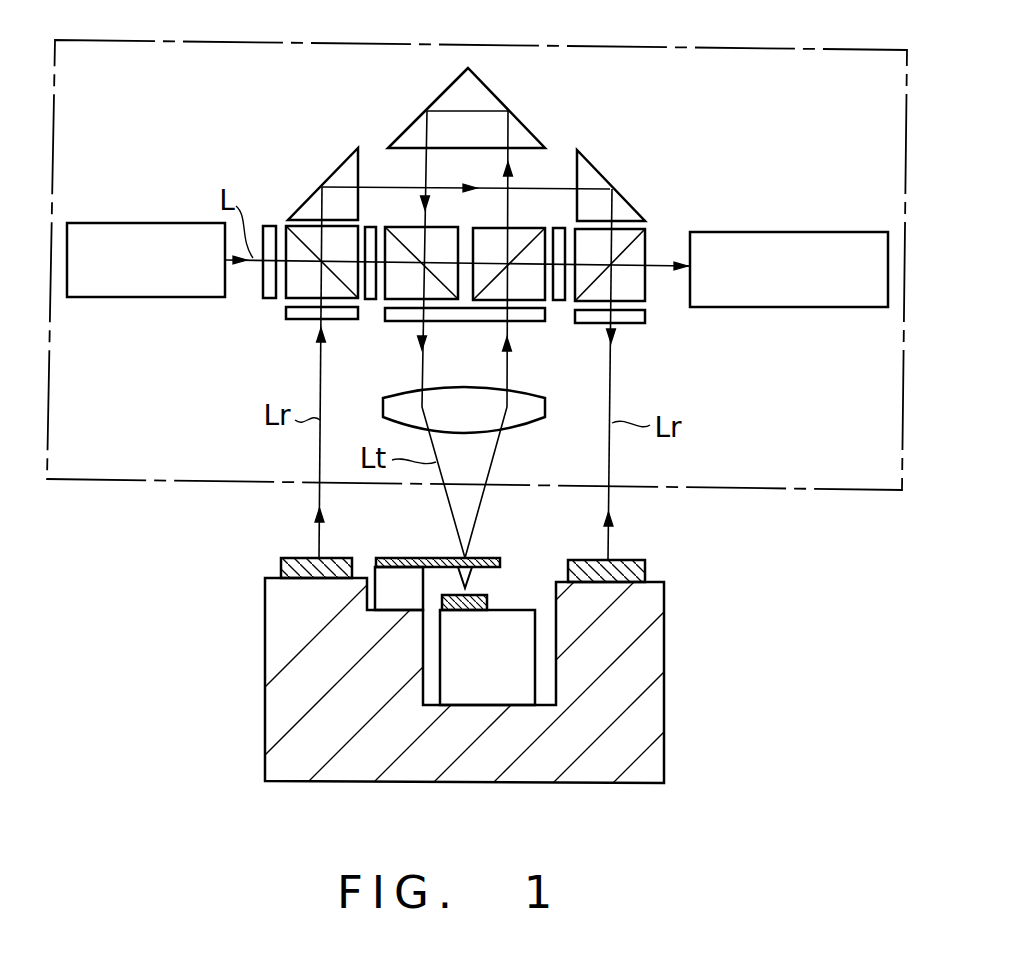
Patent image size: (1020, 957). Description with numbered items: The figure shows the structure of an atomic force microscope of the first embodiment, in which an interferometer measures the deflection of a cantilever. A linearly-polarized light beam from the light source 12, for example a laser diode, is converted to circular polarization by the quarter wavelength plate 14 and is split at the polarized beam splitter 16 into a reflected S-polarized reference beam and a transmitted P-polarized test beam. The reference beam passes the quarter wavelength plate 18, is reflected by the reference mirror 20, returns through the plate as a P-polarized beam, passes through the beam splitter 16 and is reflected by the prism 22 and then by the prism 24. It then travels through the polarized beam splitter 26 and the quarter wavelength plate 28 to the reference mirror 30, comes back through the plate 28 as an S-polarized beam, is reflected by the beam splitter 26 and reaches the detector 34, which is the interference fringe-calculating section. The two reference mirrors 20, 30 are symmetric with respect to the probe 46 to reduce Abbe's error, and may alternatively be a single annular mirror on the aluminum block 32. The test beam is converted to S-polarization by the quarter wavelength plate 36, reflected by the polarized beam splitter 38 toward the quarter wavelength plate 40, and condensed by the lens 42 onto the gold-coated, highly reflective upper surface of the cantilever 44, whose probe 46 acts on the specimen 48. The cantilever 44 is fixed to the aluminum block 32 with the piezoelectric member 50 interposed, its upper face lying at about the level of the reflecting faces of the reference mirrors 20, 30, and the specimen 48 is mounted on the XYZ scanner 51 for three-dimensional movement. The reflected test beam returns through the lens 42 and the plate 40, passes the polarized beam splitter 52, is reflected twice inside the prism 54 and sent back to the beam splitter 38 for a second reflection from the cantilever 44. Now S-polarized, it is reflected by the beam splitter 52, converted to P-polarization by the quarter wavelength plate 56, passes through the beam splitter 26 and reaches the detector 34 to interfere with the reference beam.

The light source 12 is at (150, 223).
The 1/4 wavelength plate 14 is at (270, 226).
The polarized beam splitter 16 is at (285, 320).
The 1/4 wavelength plate 18 is at (355, 320).
The reference mirror 20 is at (290, 558).
The prism 22 is at (340, 168).
The prism 24 is at (603, 175).
The polarized beam splitter 26 is at (651, 242).
The 1/4 wavelength plate 28 is at (640, 324).
The reference mirror 30 is at (636, 560).
The aluminum block 32 is at (664, 660).
The detector 34 is at (800, 232).
The 1/4 wavelength plate 36 is at (374, 227).
The polarized beam splitter 38 is at (447, 227).
The 1/4 wavelength plate 40 is at (474, 322).
The lens 42 is at (530, 428).
The cantilever 44 is at (445, 558).
The probe 46 is at (480, 580).
The specimen 48 is at (487, 600).
The piezoelectric member 50 is at (388, 578).
The XYZ scanner 51 is at (497, 677).
The polarized beam splitter 52 is at (527, 228).
The prism 54 is at (503, 100).
The 1/4 wavelength plate 56 is at (559, 302).